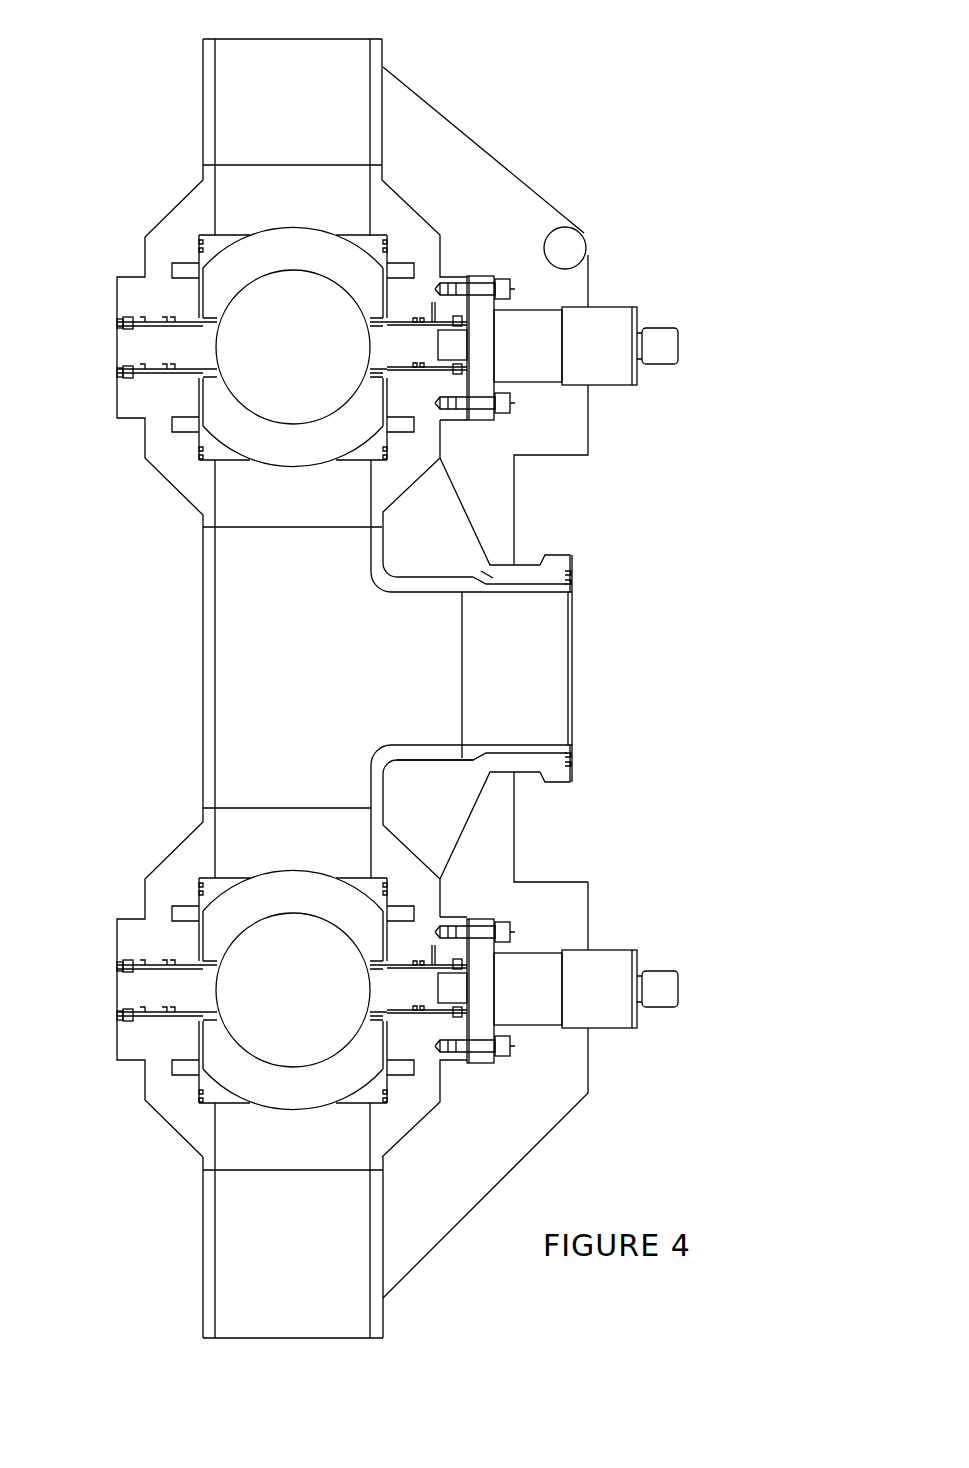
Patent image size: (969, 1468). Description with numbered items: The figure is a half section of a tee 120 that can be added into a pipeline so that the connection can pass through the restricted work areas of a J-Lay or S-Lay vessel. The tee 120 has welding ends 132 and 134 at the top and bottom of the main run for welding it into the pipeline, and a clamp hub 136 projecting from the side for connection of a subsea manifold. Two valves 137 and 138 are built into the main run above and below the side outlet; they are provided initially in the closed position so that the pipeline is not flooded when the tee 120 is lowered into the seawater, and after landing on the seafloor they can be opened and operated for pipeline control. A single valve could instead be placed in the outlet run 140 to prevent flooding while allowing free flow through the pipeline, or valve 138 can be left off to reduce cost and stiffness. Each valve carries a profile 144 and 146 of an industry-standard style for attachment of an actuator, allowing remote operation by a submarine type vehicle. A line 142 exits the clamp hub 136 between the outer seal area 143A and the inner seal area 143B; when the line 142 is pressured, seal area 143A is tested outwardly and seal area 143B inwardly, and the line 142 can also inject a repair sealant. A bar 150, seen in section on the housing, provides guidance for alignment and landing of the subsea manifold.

The tee 120 is at (505, 120).
The welding end 132 is at (383, 34).
The welding end 134 is at (395, 1333).
The clamp hub 136 is at (578, 780).
The valve 137 is at (198, 853).
The valve 138 is at (198, 485).
The outlet run 140 is at (428, 755).
The line 142 is at (525, 588).
The outer seal area 143A is at (578, 578).
The inner seal area 143B is at (580, 590).
The profile 144 is at (640, 330).
The profile 146 is at (640, 975).
The bar 150 is at (586, 243).